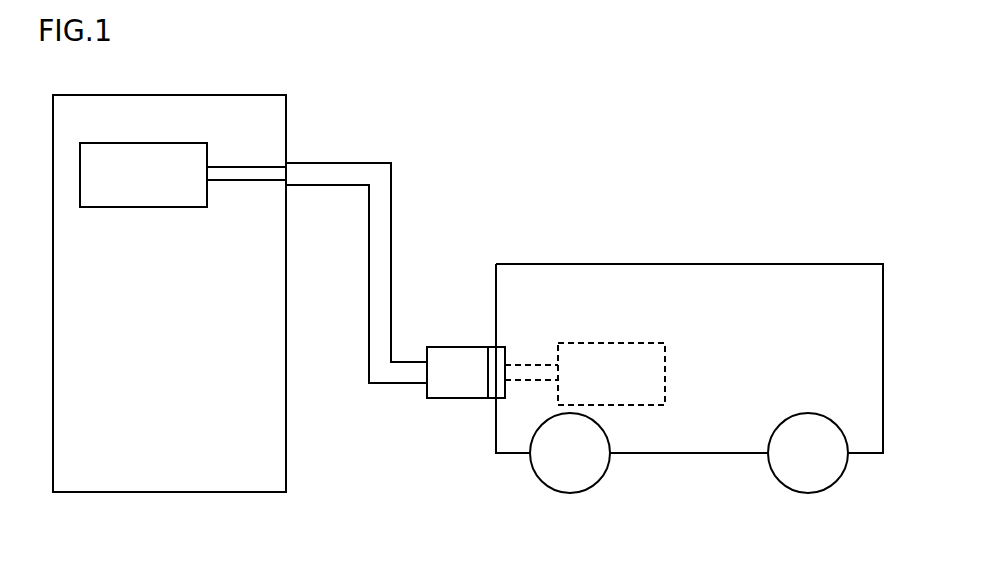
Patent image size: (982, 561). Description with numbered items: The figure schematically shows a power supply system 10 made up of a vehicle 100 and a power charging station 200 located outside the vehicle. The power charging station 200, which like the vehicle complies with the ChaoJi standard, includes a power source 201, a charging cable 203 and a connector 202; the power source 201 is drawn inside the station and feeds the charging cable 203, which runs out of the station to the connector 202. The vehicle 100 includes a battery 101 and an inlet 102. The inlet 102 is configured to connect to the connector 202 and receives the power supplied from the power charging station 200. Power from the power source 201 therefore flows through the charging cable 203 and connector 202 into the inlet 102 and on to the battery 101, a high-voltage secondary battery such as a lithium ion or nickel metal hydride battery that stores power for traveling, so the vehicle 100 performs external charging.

The power supply system 10 is at (622, 76).
The vehicle 100 is at (815, 263).
The battery 101 is at (610, 343).
The inlet 102 is at (500, 346).
The power charging station 200 is at (215, 94).
The power source 201 is at (143, 142).
The connector 202 is at (454, 346).
The charging cable 203 is at (372, 162).